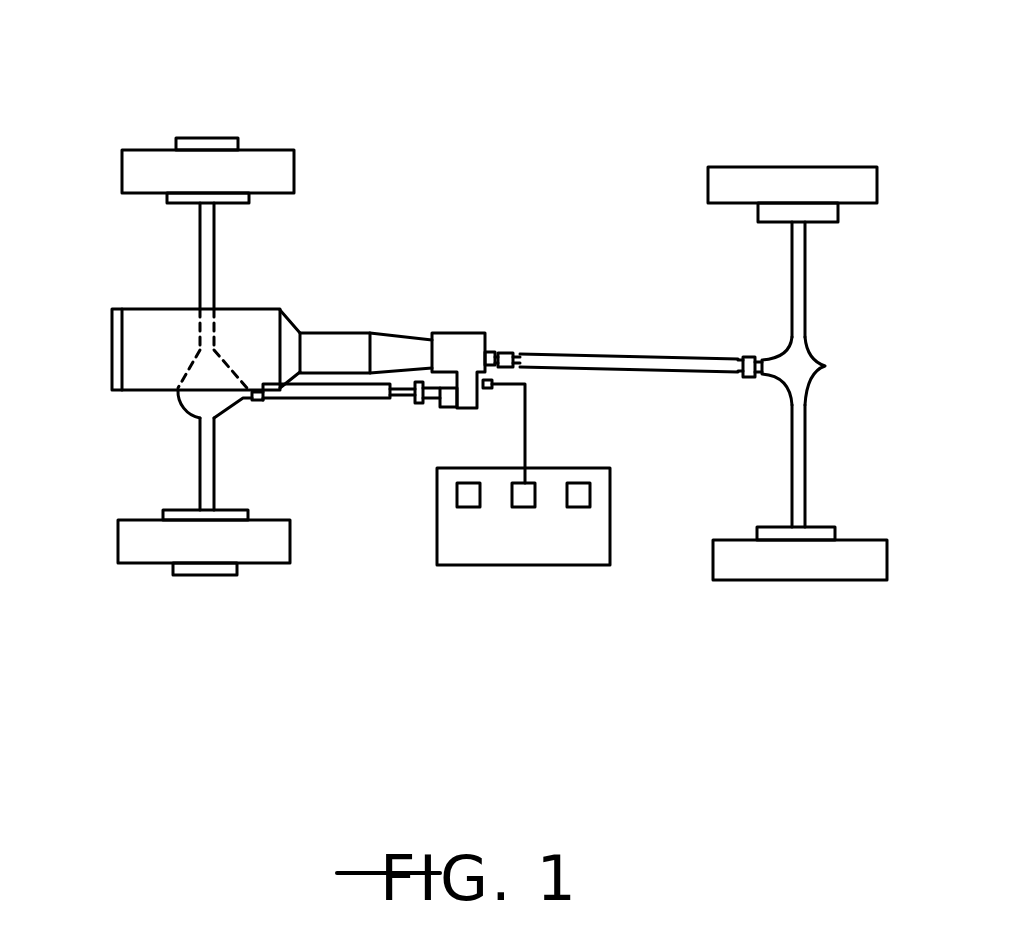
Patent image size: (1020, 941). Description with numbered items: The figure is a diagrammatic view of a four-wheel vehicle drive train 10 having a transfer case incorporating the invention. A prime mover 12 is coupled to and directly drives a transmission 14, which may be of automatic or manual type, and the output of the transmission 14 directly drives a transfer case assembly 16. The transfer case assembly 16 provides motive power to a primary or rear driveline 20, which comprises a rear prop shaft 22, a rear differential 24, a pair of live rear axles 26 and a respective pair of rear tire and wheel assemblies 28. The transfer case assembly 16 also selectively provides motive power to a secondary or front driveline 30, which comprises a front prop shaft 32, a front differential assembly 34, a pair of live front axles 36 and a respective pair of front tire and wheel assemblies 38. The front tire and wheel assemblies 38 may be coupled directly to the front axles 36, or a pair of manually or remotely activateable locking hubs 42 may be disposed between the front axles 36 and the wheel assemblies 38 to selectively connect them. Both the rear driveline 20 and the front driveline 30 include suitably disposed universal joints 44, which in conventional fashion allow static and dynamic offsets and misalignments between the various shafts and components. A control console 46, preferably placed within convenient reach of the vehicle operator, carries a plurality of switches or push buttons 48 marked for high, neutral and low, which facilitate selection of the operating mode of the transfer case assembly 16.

The four-wheel vehicle drive train 10 is at (478, 96).
The prime mover 12 is at (131, 344).
The transmission 14 is at (323, 340).
The transfer case assembly 16 is at (454, 329).
The primary or rear driveline 20 is at (600, 237).
The primary or rear prop shaft 22 is at (690, 355).
The primary or rear differential 24 is at (808, 372).
The primary or rear axles 26 is at (798, 270).
The primary or rear tire and wheel assemblies 28 is at (802, 150).
The secondary or front driveline 30 is at (110, 448).
The secondary or front prop shaft 32 is at (338, 395).
The secondary or front differential assembly 34 is at (202, 400).
The secondary or front axles 36 is at (200, 260).
The secondary or front tire and wheel assemblies 38 is at (226, 95).
The locking hubs 42 is at (182, 137).
The universal joints 44 is at (507, 352).
The control console 46 is at (522, 578).
The switches or push buttons 48 is at (577, 483).